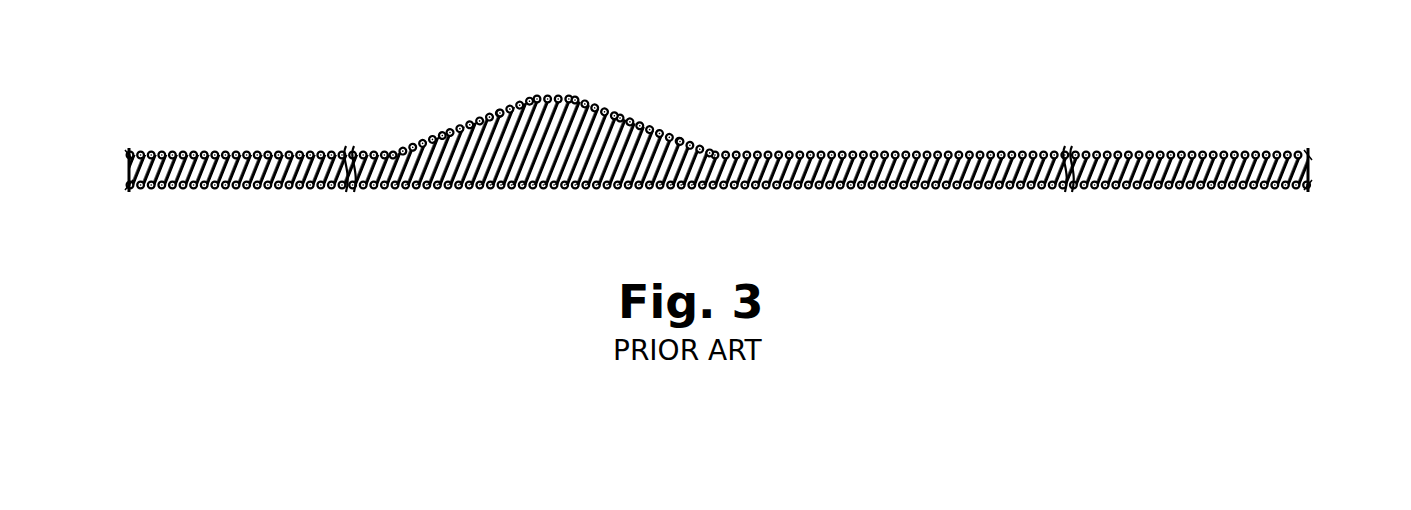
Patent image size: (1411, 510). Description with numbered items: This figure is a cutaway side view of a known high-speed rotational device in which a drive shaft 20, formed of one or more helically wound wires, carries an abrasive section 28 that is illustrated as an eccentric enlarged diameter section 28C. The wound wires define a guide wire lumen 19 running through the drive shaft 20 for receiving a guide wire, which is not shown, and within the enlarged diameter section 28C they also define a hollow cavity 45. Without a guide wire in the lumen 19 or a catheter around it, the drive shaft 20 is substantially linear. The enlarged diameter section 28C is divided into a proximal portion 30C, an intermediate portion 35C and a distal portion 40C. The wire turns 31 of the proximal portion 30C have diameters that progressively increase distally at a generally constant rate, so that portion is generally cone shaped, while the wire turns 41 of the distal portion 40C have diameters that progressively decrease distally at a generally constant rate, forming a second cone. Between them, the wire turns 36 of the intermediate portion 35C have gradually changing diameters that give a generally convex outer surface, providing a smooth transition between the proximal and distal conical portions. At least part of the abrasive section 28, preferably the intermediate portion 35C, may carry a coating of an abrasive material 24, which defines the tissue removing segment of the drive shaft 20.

The guide wire lumen 19 is at (131, 168).
The drive shaft 20 is at (282, 198).
The abrasive section 28 is at (670, 52).
The eccentric enlarged diameter section 28C is at (660, 70).
The abrasive material 24 is at (528, 101).
The wire turns of the intermediate portion 36 is at (580, 101).
The wire turns of the proximal portion 31 is at (676, 138).
The wire turns of the distal portion 41 is at (428, 140).
The hollow cavity 45 is at (512, 148).
The distal portion 40C is at (525, 200).
The intermediate portion 35C is at (585, 200).
The proximal portion 30C is at (713, 200).